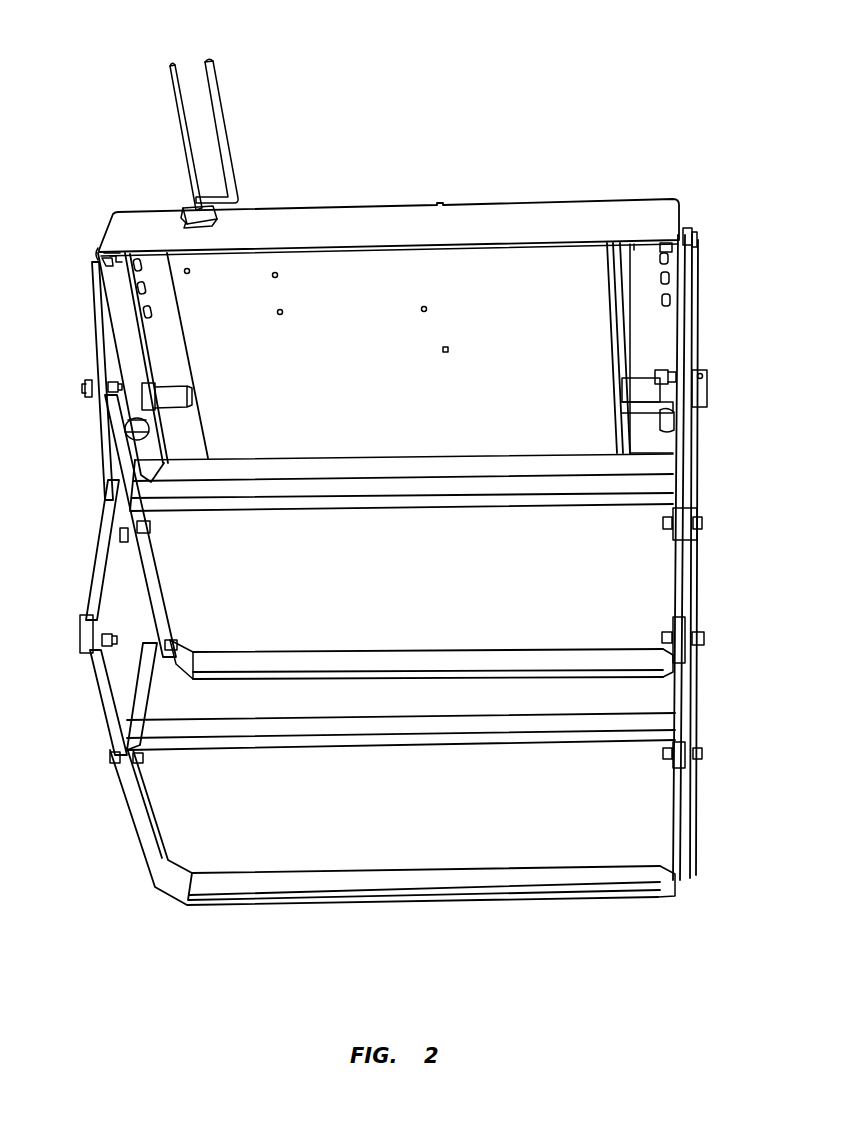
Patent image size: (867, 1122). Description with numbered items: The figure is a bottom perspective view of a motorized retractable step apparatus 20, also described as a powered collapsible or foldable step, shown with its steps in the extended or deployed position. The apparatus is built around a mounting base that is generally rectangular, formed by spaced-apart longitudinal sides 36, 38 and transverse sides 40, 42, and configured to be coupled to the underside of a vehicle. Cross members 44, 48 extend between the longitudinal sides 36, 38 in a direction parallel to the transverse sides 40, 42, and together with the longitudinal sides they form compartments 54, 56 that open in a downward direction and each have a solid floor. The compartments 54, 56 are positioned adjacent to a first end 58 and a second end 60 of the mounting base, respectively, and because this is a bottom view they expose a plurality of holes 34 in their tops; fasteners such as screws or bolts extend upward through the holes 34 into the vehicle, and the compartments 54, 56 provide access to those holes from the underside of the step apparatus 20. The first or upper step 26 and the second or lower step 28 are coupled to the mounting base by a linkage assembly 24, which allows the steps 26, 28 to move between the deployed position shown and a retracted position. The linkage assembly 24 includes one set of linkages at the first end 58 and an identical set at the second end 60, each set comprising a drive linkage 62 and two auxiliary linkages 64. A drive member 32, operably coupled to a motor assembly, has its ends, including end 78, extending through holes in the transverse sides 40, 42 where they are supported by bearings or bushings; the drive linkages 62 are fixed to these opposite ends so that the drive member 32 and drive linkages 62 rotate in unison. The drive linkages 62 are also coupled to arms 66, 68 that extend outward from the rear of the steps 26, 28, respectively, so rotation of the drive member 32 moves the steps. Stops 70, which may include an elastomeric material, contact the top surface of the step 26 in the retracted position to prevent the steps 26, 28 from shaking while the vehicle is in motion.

The step apparatus 20 is at (693, 107).
The linkage assembly 24 is at (65, 658).
The first step 26 is at (657, 576).
The second step 28 is at (648, 812).
The drive member 32 is at (178, 391).
The holes 34 is at (148, 290).
The longitudinal side 36 is at (643, 442).
The longitudinal side 38 is at (371, 226).
The transverse side 40 is at (123, 345).
The transverse side 42 is at (681, 216).
The cross member 44 is at (187, 343).
The cross member 48 is at (612, 330).
The compartment 54 is at (117, 281).
The compartment 56 is at (636, 252).
The first end 58 is at (70, 400).
The second end 60 is at (724, 345).
The drive linkage 62 is at (97, 553).
The auxiliary linkage 64 is at (90, 357).
The arm 66 is at (116, 433).
The arm 68 is at (103, 697).
The stop 70 is at (143, 438).
The end of drive member 78 is at (720, 392).